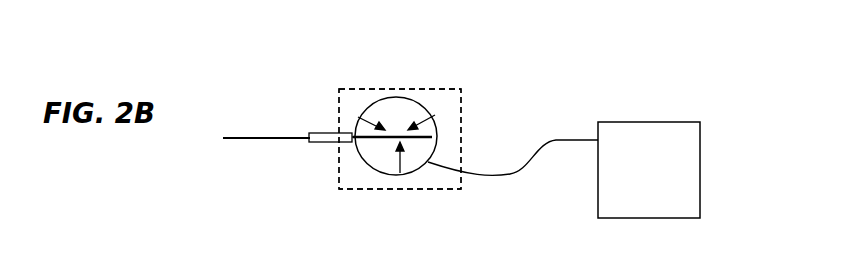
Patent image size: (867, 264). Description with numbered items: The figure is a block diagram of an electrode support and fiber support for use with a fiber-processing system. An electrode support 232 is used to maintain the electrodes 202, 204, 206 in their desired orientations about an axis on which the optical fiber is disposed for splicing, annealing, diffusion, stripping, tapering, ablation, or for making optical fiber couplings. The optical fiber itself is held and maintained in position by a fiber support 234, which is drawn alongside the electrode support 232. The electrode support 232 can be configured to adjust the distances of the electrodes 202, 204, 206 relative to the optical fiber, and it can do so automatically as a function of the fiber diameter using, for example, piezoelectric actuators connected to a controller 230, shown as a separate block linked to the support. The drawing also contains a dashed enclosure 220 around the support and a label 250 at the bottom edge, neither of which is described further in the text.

The electrode 202 is at (474, 118).
The electrode 204 is at (474, 118).
The electrode 206 is at (432, 83).
The detector housing 220 is at (462, 135).
The controller 230 is at (668, 208).
The electrode support 232 is at (387, 100).
The fiber support 234 is at (318, 143).
The reference element 250 is at (269, 262).